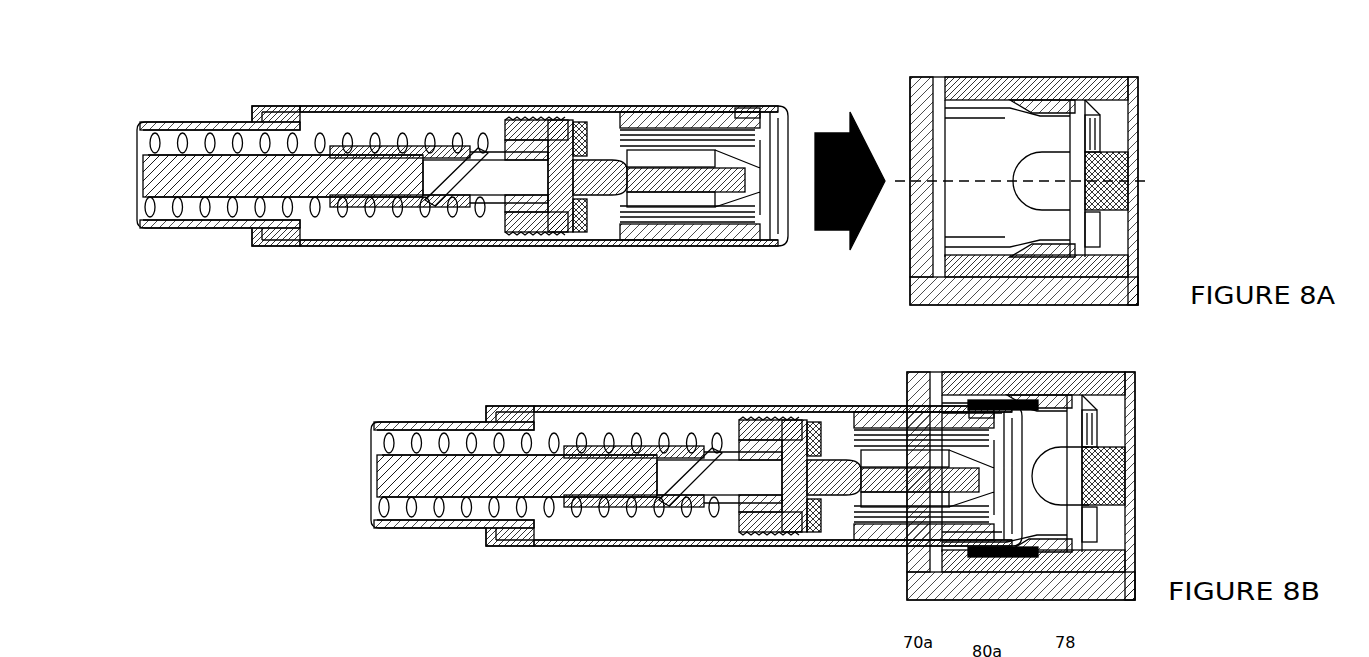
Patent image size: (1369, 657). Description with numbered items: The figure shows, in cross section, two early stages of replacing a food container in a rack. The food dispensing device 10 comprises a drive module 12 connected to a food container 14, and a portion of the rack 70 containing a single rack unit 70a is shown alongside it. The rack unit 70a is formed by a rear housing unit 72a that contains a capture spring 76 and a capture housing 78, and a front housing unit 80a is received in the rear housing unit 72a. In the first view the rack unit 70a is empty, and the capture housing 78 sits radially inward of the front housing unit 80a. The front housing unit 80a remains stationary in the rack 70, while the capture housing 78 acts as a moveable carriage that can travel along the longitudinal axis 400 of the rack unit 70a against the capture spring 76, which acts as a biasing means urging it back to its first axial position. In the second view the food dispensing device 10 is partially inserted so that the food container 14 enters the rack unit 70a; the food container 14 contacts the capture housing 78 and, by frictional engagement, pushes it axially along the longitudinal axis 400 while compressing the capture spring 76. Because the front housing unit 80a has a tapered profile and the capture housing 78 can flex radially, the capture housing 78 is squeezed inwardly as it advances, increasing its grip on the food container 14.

In FIG. 8A, the food dispensing device 10 is at (533, 51).
In FIG. 8B, the food dispensing device 10 is at (758, 377).
In FIG. 8A, the drive module 12 is at (407, 106).
In FIG. 8B, the drive module 12 is at (696, 447).
In FIG. 8A, the food container 14 is at (676, 108).
In FIG. 8B, the food container 14 is at (933, 446).
In FIG. 8A, the rack 70 is at (1174, 222).
In FIG. 8B, the rack 70 is at (1163, 527).
In FIG. 8A, the rack unit 70a is at (935, 117).
In FIG. 8B, the rack unit 70a is at (921, 445).
In FIG. 8A, the rear housing unit 72a is at (1138, 256).
In FIG. 8B, the rear housing unit 72a is at (1078, 486).
In FIG. 8A, the capture spring 76 is at (1110, 128).
In FIG. 8B, the capture spring 76 is at (1141, 421).
In FIG. 8A, the capture housing 78 is at (1047, 113).
In FIG. 8B, the capture housing 78 is at (1052, 440).
In FIG. 8A, the front housing unit 80a is at (985, 95).
In FIG. 8B, the front housing unit 80a is at (1033, 440).
In FIG. 8A, the longitudinal axis 400 is at (1162, 183).